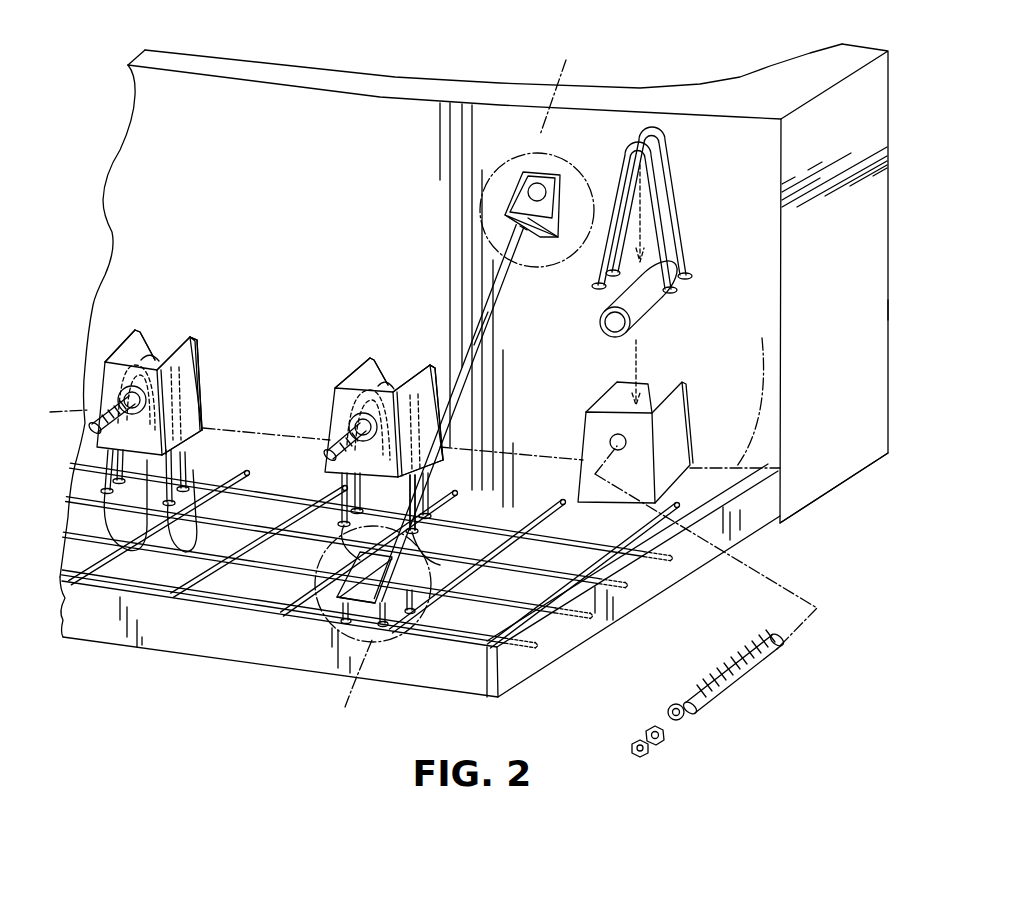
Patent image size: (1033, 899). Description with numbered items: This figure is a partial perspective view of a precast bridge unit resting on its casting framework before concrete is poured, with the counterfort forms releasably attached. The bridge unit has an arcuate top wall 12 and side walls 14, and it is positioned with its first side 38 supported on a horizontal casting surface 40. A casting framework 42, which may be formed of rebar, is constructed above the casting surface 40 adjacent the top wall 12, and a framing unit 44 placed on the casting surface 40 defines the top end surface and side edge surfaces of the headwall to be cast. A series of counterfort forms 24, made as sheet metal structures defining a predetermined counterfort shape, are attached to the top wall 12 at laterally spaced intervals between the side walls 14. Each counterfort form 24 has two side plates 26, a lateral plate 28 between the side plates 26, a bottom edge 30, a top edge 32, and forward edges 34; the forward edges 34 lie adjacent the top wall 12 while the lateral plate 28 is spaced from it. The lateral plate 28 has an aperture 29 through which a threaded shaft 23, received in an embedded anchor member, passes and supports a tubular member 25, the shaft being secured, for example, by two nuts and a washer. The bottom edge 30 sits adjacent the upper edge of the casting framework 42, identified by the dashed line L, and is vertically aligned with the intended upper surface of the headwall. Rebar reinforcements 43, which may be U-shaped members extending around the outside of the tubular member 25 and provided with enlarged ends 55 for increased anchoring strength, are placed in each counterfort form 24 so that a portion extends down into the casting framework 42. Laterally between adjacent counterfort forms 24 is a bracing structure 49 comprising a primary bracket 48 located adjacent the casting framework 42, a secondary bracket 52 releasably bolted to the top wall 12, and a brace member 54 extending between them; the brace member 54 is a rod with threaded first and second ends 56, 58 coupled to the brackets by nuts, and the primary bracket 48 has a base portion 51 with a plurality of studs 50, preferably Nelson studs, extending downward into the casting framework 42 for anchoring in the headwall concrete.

The arcuate top wall 12 is at (392, 88).
The side walls 14 is at (838, 268).
The threaded shaft 23 is at (97, 425).
The counterfort form 24 is at (103, 377).
The tubular member 25 is at (655, 312).
The side plates 26 is at (125, 350).
The lateral plate 28 is at (112, 441).
The aperture 29 is at (627, 447).
The bottom edge 30 is at (266, 494).
The top edge 32 is at (170, 345).
The forward edges 34 is at (153, 368).
The first side 38 is at (860, 472).
The horizontal casting surface 40 is at (371, 595).
The casting framework 42 is at (300, 592).
The rebar reinforcements 43 is at (668, 233).
The framing unit 44 is at (545, 650).
The primary bracket 48 is at (395, 560).
The bracing structure 49 is at (485, 293).
The studs 50 is at (385, 605).
The base portion 51 is at (330, 590).
The secondary bracket 52 is at (552, 200).
The brace member 54 is at (480, 362).
The enlarged ends 55 is at (690, 292).
The first end 56 is at (415, 490).
The second end 58 is at (545, 268).
The dashed line L is at (755, 322).